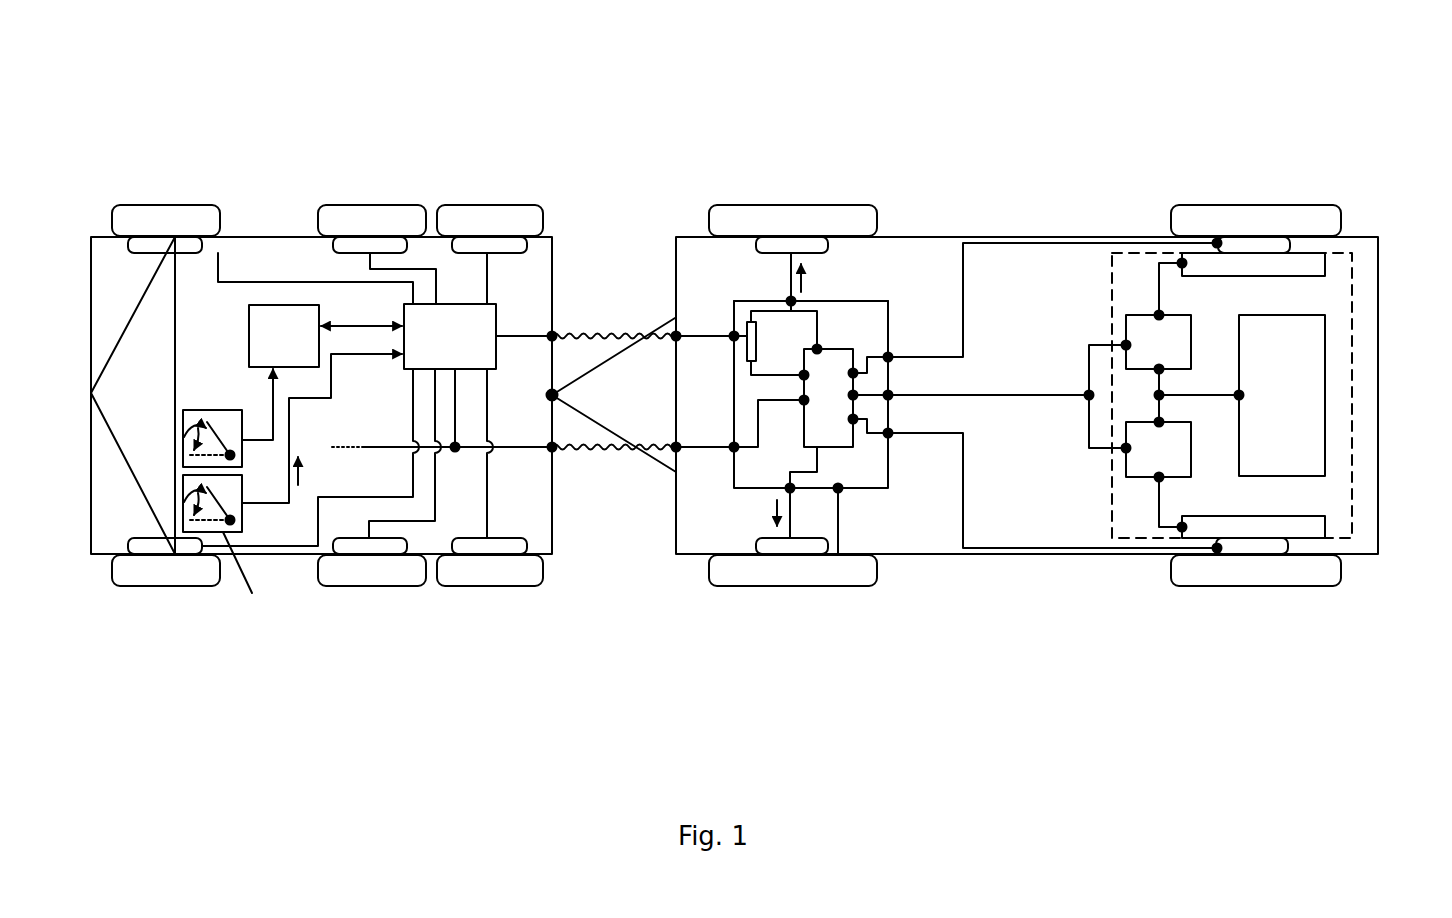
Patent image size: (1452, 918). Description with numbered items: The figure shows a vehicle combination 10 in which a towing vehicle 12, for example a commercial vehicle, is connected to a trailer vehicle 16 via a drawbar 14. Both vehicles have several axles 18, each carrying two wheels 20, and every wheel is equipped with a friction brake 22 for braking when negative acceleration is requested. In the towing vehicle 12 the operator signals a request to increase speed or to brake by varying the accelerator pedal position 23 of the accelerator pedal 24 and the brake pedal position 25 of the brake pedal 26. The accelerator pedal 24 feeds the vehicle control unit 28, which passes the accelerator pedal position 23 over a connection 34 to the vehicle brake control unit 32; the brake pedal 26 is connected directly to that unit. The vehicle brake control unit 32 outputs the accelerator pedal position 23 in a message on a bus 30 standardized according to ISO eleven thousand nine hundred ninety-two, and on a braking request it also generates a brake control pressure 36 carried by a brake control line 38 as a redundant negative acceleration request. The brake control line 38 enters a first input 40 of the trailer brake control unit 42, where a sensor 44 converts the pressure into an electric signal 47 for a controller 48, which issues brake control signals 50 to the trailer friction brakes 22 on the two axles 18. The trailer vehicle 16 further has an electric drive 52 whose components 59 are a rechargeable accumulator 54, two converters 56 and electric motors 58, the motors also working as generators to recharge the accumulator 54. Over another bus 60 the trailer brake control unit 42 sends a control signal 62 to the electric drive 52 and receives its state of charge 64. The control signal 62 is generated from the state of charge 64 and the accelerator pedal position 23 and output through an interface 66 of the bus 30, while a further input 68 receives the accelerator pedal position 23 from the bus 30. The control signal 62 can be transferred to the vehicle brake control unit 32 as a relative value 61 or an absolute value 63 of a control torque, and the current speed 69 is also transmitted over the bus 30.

The vehicle combination 10 is at (804, 80).
The towing vehicle 12 is at (320, 116).
The drawbar 14 is at (602, 340).
The trailer vehicle 16 is at (1226, 127).
The axle 18 is at (169, 668).
The wheel 20 is at (177, 215).
The friction brake 22 is at (150, 243).
The accelerator pedal position 23 is at (183, 436).
The accelerator pedal 24 is at (215, 408).
The brake pedal position 25 is at (184, 503).
The brake pedal 26 is at (242, 580).
The vehicle control unit 28 is at (284, 336).
The bus 30 is at (352, 446).
The vehicle brake control unit 32 is at (450, 336).
The connection 34 is at (366, 328).
The brake control pressure 36 is at (540, 315).
The brake control line 38 is at (608, 332).
The first input 40 is at (734, 336).
The trailer brake control unit 42 is at (888, 301).
The sensor 44 is at (747, 350).
The electric signal 47 is at (791, 374).
The controller 48 is at (828, 398).
The brake control signal 50 is at (789, 294).
The electric drive 52 is at (1353, 306).
The accumulator 54 is at (1242, 395).
The converter 56 is at (1140, 396).
The electric motor 58 is at (1326, 262).
The components 59 is at (1340, 397).
The bus 60 is at (940, 390).
The relative value 61 is at (578, 464).
The control signal 62 is at (684, 456).
The absolute value 63 is at (620, 464).
The state of charge 64 is at (1035, 410).
The interface 66 is at (900, 388).
The further input 68 is at (733, 445).
The current speed 69 is at (589, 427).